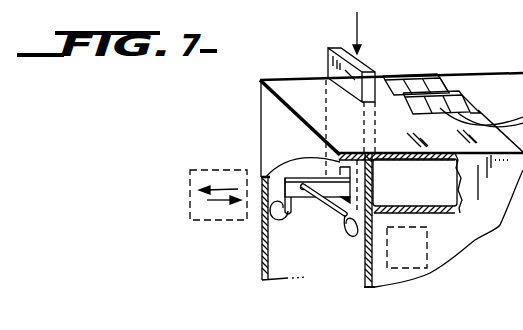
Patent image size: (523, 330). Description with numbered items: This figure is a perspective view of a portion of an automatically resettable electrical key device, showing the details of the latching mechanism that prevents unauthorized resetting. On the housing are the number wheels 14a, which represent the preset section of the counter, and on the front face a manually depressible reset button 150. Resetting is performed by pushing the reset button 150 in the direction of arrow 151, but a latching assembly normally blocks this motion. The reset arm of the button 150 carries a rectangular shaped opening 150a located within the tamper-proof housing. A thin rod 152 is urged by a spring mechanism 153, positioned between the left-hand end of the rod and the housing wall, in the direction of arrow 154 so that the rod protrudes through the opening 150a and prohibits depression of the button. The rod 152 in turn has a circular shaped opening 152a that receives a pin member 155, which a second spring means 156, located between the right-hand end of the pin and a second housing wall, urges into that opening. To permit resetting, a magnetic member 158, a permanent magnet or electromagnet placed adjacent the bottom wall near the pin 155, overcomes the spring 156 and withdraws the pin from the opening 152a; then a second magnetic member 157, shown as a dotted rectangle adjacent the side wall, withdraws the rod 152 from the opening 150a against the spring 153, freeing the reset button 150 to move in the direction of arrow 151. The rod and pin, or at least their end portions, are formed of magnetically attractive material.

The number wheels 14a is at (418, 76).
The reset button 150 is at (329, 57).
The rectangular shaped opening 150a is at (360, 203).
The arrow 151 is at (360, 14).
The thin rod 152 is at (289, 178).
The circular shaped opening 152a is at (301, 185).
The spring mechanism 153 is at (273, 223).
The arrow 154 is at (215, 200).
The pin member 155 is at (333, 216).
The second spring means 156 is at (355, 246).
The second magnetic member 157 is at (226, 140).
The magnetic member 158 is at (427, 251).